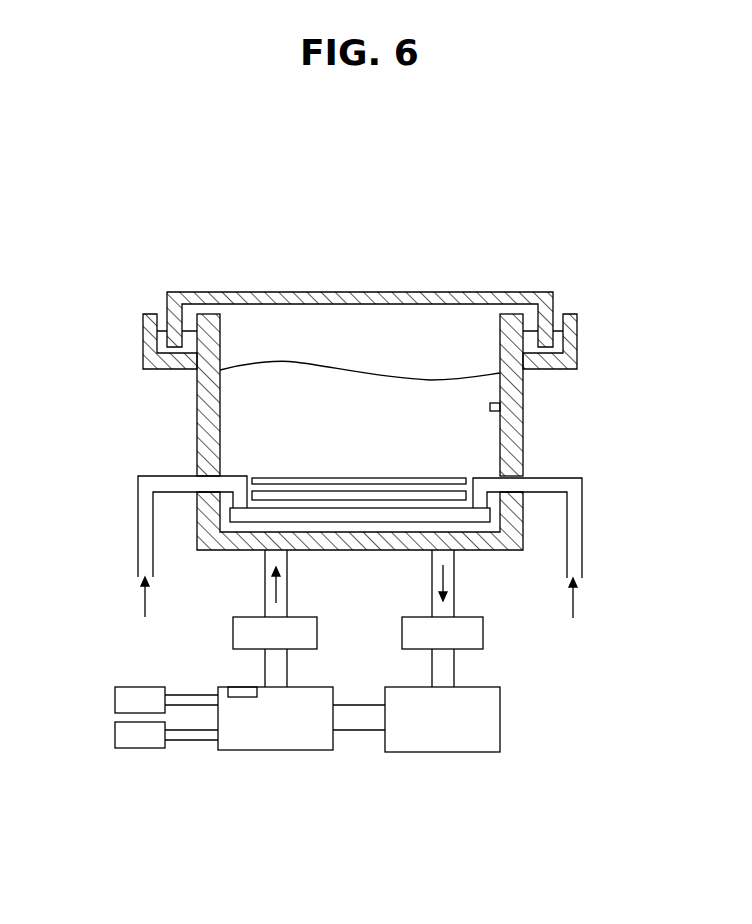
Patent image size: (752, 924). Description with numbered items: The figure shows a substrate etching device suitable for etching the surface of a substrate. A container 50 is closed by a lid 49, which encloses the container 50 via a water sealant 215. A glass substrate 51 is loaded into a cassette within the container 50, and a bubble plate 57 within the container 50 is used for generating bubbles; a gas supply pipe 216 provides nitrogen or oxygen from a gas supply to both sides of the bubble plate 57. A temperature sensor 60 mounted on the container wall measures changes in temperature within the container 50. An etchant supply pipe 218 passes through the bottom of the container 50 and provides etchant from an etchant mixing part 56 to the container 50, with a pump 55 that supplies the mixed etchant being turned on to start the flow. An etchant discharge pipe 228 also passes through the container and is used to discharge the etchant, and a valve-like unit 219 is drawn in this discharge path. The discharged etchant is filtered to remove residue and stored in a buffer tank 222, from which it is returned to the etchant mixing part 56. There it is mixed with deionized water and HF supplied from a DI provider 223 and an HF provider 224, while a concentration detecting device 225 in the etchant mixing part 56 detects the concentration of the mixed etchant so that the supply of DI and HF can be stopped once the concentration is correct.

The lid 49 is at (547, 302).
The container 50 is at (200, 421).
The glass substrate 51 is at (381, 478).
The pump 55 is at (317, 632).
The etchant mixing part 56 is at (297, 750).
The bubble plate 57 is at (359, 522).
The temperature sensor 60 is at (500, 407).
The water sealant 215 is at (565, 351).
The gas supply pipe 216 is at (582, 548).
The etchant supply pipe 218 is at (265, 581).
The drain valve 219 is at (483, 634).
The buffer tank 222 is at (500, 717).
The DI provider 223 is at (115, 699).
The HF provider 224 is at (115, 732).
The concentration detecting device 225 is at (234, 687).
The etchant discharge pipe 228 is at (455, 584).